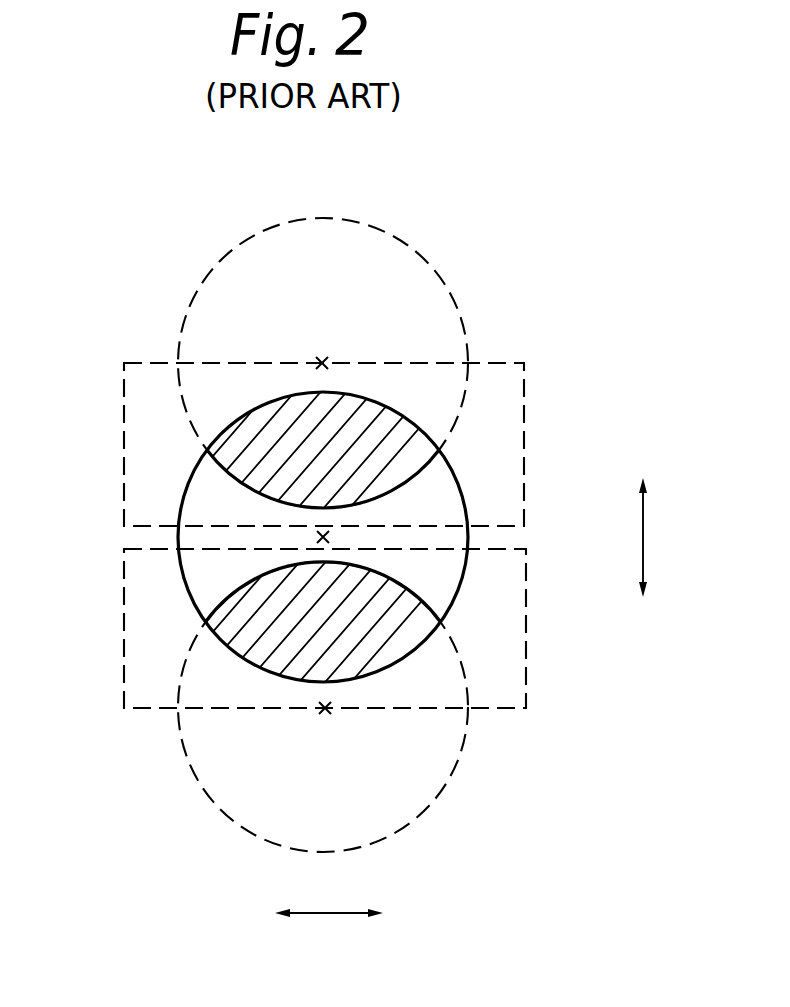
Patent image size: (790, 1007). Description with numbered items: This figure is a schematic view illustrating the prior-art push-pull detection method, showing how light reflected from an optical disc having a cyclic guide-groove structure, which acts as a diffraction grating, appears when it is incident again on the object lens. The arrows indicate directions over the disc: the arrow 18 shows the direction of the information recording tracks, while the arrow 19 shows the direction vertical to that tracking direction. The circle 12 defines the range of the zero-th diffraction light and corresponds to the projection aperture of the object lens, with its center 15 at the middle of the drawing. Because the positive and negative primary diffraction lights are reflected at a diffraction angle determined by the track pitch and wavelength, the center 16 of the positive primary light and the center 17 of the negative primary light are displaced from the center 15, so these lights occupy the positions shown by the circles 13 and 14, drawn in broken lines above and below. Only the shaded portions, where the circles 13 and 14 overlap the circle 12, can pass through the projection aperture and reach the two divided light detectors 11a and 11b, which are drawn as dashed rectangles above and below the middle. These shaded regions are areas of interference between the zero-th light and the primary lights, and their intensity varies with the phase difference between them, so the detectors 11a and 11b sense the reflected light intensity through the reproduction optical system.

The light detector 11a is at (514, 393).
The light detector 11b is at (515, 622).
The circle 12 is at (468, 505).
The circle 13 is at (394, 238).
The circle 14 is at (460, 742).
The center 15 is at (328, 536).
The center 16 is at (322, 362).
The center 17 is at (325, 713).
The arrow 18 is at (328, 913).
The arrow 19 is at (643, 535).